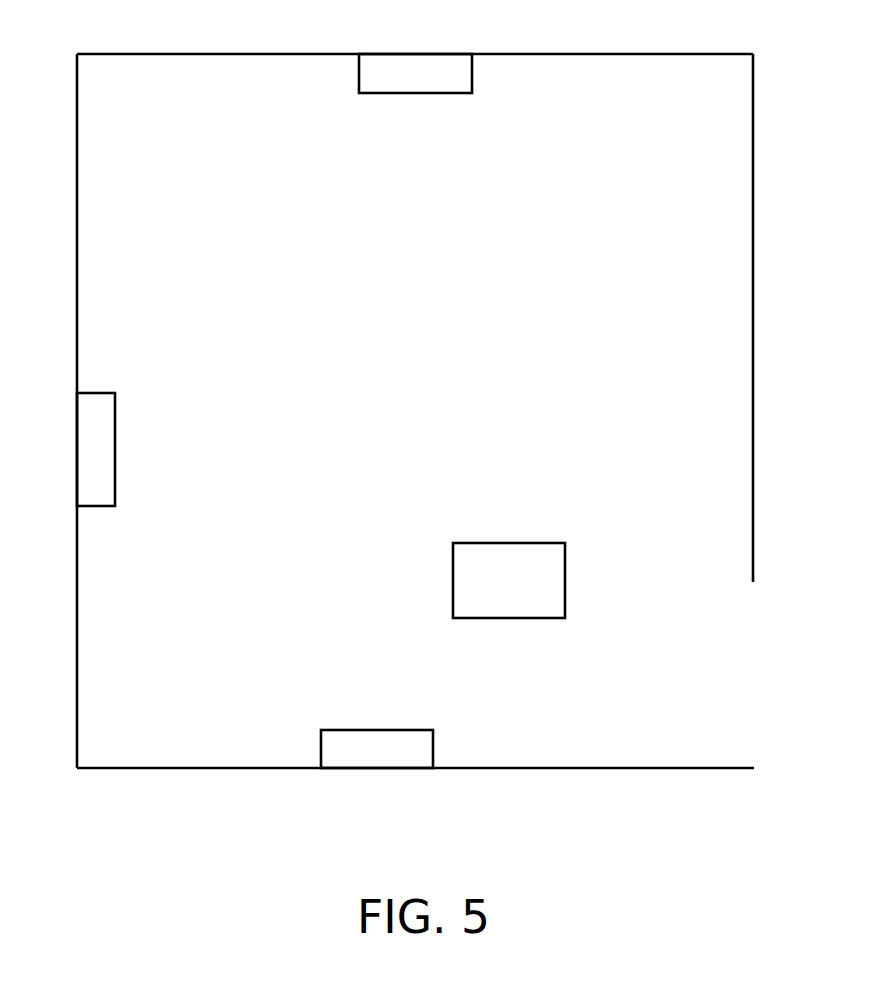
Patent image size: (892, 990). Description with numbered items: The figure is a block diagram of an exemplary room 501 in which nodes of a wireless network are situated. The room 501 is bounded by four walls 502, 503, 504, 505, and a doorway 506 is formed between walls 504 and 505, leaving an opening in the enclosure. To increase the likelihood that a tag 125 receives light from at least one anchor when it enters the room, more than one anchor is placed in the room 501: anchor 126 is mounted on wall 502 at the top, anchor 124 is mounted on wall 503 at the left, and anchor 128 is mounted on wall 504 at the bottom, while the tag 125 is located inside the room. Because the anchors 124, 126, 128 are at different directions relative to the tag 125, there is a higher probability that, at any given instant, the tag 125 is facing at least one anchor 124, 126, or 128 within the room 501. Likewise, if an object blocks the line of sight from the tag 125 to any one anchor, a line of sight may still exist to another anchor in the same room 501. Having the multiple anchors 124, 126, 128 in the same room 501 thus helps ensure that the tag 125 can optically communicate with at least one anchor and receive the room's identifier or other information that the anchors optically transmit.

The room 501 is at (440, 385).
The wall 502 is at (152, 56).
The wall 503 is at (77, 655).
The wall 504 is at (170, 768).
The wall 505 is at (753, 204).
The doorway 506 is at (756, 662).
The anchor 124 is at (115, 454).
The tag 125 is at (508, 543).
The anchor 126 is at (406, 94).
The anchor 128 is at (358, 730).